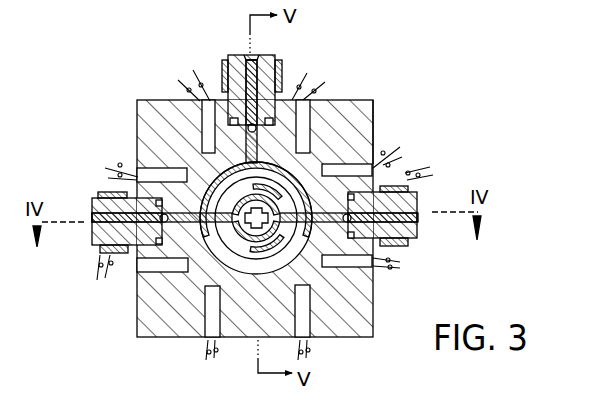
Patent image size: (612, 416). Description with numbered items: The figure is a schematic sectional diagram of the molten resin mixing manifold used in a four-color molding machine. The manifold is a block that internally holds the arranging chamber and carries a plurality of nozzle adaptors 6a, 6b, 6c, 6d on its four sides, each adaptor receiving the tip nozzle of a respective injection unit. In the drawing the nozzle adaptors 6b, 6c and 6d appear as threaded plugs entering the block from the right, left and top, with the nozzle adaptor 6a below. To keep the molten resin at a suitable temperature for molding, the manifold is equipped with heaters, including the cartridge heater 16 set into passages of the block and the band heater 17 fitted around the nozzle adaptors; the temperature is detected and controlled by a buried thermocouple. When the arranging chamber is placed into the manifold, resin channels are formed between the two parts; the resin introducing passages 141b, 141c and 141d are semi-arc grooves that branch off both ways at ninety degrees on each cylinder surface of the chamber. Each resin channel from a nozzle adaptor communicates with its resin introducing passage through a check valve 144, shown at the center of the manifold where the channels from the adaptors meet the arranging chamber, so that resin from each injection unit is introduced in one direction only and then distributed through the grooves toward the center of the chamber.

The nozzle adaptor 6a is at (152, 412).
The nozzle adaptor 6b is at (420, 198).
The nozzle adaptor 6c is at (92, 205).
The nozzle adaptor 6d is at (232, 55).
The cartridge heater 16 is at (363, 167).
The band heater 17 is at (278, 58).
The check valve 144 is at (298, 112).
The resin channel 141b is at (290, 252).
The resin channel 141c is at (232, 240).
The resin channel 141d is at (369, 113).